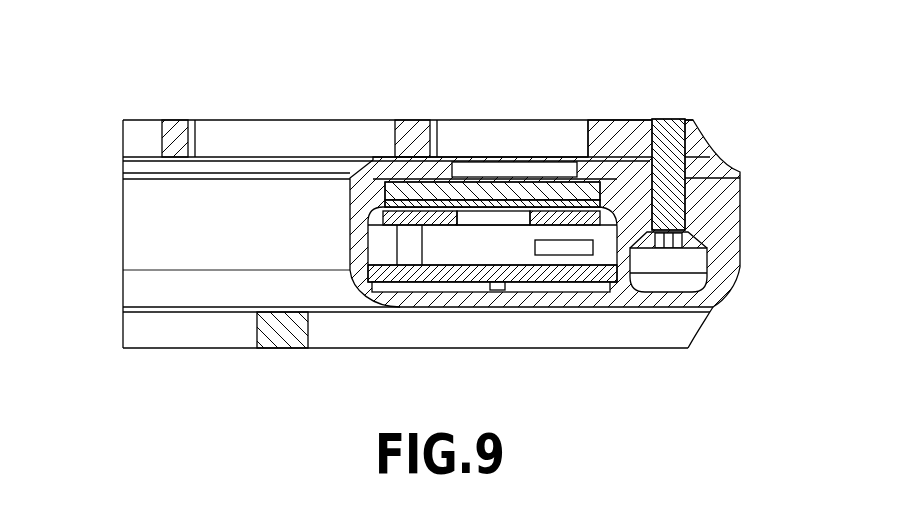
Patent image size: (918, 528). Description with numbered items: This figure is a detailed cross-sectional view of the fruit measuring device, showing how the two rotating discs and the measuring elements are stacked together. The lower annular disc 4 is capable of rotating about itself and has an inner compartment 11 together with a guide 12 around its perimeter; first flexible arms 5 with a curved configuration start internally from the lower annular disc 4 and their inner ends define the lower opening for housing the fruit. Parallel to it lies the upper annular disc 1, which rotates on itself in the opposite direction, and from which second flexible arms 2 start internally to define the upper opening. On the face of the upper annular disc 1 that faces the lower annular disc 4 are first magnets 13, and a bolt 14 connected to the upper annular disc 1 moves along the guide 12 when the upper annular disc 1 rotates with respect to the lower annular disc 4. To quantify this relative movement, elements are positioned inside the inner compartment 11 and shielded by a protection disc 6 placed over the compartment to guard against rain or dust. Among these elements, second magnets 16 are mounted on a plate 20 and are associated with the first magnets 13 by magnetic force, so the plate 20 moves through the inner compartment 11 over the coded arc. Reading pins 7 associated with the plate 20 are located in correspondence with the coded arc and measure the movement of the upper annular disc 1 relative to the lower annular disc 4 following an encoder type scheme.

The upper annular disc 1 is at (441, 178).
The second flexible arms 2 is at (195, 123).
The lower annular disc 4 is at (357, 265).
The first flexible arms 5 is at (283, 340).
The protection disc 6 is at (440, 218).
The reading pins 7 is at (393, 204).
The inner compartment 11 is at (523, 272).
The guide 12 is at (692, 260).
The first magnets 13 is at (547, 162).
The bolt 14 is at (663, 140).
The second magnets 16 is at (478, 228).
The plate 20 is at (552, 217).